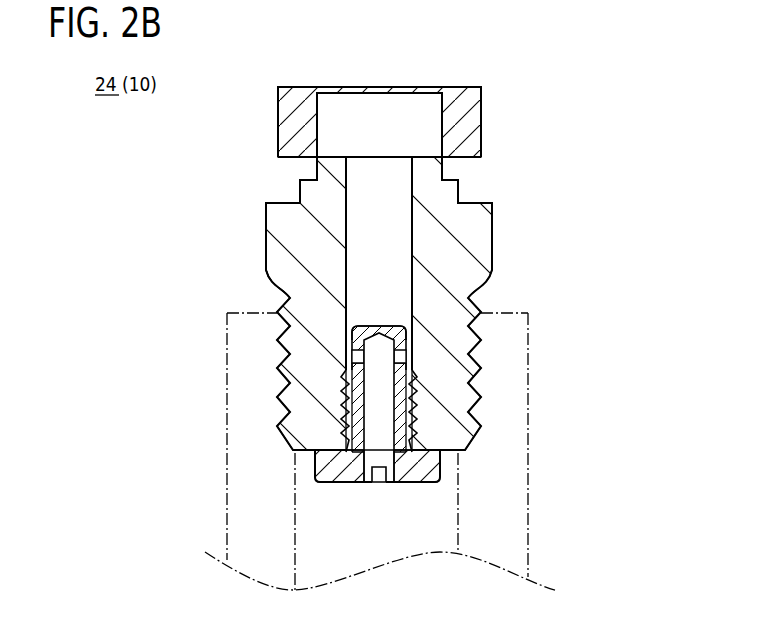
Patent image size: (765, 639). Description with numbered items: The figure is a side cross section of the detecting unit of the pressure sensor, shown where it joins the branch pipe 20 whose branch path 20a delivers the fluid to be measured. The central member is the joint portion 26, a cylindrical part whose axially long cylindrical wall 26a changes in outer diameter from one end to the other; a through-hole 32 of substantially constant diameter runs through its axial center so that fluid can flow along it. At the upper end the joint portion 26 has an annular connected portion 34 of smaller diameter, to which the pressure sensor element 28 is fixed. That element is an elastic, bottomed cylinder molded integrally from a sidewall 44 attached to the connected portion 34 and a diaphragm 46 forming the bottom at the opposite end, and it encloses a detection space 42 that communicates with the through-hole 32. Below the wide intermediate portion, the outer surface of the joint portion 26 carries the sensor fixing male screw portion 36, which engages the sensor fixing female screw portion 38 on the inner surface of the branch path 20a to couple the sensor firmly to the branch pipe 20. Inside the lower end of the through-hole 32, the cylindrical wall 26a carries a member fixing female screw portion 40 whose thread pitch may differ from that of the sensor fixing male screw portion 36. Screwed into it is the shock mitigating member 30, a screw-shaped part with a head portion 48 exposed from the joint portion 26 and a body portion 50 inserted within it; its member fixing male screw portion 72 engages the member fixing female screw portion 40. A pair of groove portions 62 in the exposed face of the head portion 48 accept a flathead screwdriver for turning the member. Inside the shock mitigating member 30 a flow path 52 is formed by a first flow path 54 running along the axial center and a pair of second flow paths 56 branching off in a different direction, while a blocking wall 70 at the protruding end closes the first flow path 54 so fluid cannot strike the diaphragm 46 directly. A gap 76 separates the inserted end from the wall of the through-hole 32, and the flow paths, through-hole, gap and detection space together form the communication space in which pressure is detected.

The branch pipe 20 is at (226, 428).
The branch path 20a is at (323, 543).
The joint portion 26 is at (243, 227).
The cylindrical wall 26a is at (288, 247).
The pressure sensor element 28 is at (267, 124).
The shock mitigating member 30 is at (454, 472).
The through-hole 32 is at (390, 237).
The connected portion 34 is at (447, 172).
The sensor fixing male screw portion 36 is at (467, 314).
The sensor fixing female screw portion 38 is at (292, 430).
The member fixing female screw portion 40 is at (400, 390).
The detection space 42 is at (427, 120).
The sidewall 44 is at (473, 128).
The diaphragm 46 is at (364, 87).
The head portion 48 is at (418, 472).
The body portion 50 is at (352, 380).
The flow path 52 is at (583, 353).
The first flow path 54 is at (380, 443).
The second flow paths 56 is at (396, 360).
The groove portions 62 is at (375, 483).
The blocking wall 70 is at (383, 325).
The member fixing male screw portion 72 is at (345, 410).
The gap 76 is at (337, 337).